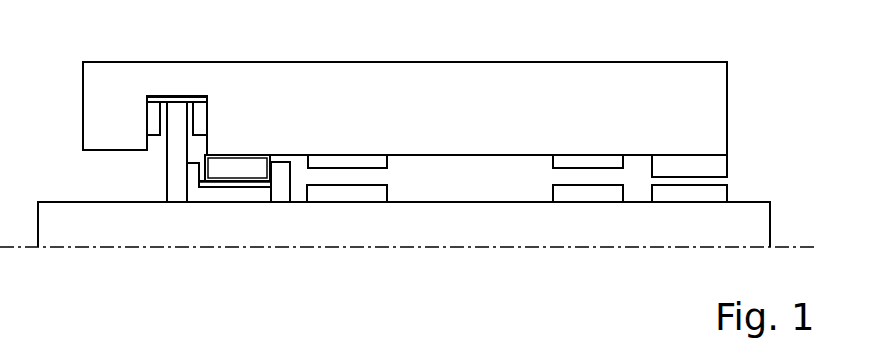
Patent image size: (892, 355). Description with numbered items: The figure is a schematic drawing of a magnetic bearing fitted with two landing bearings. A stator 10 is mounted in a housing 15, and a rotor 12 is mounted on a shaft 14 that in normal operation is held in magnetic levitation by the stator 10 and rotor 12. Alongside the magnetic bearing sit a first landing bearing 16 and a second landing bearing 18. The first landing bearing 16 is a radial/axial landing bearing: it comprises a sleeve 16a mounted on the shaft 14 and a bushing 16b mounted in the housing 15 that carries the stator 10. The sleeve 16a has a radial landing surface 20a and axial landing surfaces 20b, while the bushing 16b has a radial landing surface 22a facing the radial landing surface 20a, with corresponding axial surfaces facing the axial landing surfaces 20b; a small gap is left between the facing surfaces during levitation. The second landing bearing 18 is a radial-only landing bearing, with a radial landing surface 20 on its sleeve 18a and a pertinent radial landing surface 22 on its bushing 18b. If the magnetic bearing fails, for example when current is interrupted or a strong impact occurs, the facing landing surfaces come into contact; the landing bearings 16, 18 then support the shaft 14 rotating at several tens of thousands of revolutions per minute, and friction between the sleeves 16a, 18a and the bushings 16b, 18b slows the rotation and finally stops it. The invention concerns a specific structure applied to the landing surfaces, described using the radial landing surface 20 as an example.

The stator 10 is at (157, 119).
The rotor 12 is at (173, 160).
The shaft 14 is at (412, 230).
The housing 15 is at (375, 107).
The first landing bearing 16 is at (240, 165).
The sleeve 16a is at (197, 193).
The bushing 16b is at (213, 165).
The second landing bearing 18 is at (683, 153).
The sleeve 18a is at (703, 197).
The bushing 18b is at (688, 163).
The radial landing surface 20 is at (703, 183).
The radial landing surface 20a is at (240, 187).
The axial landing surface 20b is at (267, 187).
The radial landing surface 22 is at (703, 175).
The radial landing surface 22a is at (260, 177).